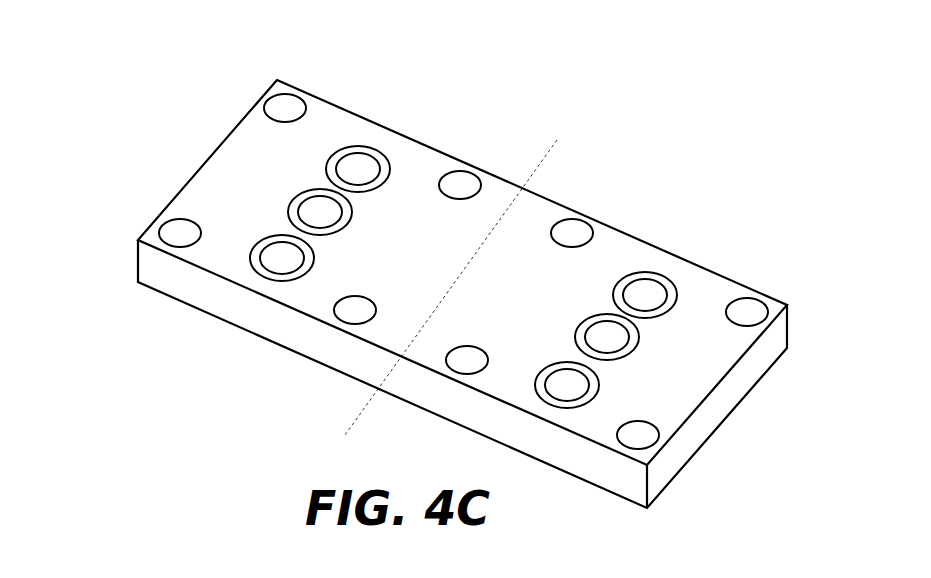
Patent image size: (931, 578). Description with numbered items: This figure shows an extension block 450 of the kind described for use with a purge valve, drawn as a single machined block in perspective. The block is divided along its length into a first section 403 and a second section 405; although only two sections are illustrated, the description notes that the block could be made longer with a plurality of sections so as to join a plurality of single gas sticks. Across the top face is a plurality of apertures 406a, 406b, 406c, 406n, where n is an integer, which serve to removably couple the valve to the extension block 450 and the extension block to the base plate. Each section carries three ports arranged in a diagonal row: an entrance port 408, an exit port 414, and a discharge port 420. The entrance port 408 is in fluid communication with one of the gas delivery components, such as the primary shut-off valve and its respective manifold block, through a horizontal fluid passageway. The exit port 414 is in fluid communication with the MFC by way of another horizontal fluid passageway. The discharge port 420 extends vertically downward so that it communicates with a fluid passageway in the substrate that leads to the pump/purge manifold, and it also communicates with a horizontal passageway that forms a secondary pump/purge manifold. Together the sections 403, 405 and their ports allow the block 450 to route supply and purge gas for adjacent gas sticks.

The extension block 450 is at (720, 158).
The first section 403 is at (265, 200).
The second section 405 is at (707, 371).
The aperture 406a is at (173, 232).
The aperture 406b is at (282, 108).
The aperture 406c is at (572, 233).
The aperture 406n is at (747, 312).
The entrance port 408 is at (357, 168).
The discharge port 420 is at (313, 211).
The exit port 414 is at (282, 258).